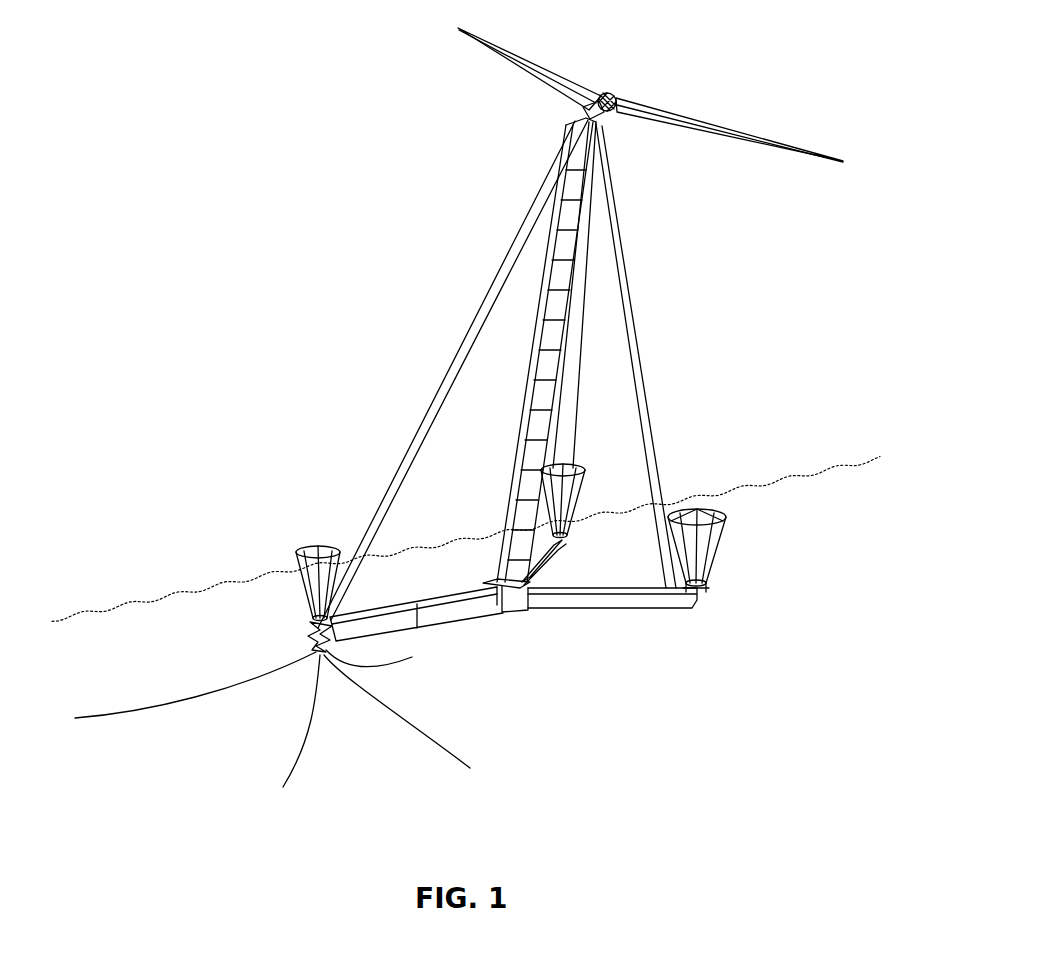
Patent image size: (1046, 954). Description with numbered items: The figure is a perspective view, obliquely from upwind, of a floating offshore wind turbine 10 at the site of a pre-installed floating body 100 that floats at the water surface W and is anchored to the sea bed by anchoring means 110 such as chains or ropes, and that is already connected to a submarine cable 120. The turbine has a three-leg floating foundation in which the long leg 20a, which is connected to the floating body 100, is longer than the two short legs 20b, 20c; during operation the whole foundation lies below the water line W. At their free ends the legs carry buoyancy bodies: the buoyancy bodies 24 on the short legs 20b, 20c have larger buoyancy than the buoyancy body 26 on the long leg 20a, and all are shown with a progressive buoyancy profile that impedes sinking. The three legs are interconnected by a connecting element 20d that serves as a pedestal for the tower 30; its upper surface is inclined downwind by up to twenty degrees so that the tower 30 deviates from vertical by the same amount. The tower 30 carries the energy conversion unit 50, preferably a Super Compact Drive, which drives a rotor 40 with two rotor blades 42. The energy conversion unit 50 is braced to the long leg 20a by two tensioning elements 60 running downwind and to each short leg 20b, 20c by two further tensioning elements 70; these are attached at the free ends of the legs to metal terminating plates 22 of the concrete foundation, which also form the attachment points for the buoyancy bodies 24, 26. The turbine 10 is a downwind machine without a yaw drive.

The floating offshore wind turbine 10 is at (364, 128).
The water line W is at (464, 539).
The rotor 40 is at (616, 93).
The rotor blades 42 is at (803, 149).
The energy conversion unit 50 is at (583, 105).
The tower 30 is at (552, 333).
The tensioning elements 60 is at (452, 348).
The further tensioning elements 70 is at (642, 382).
The buoyancy body 26 is at (300, 556).
The floating body 100 is at (310, 645).
The anchoring means 110 is at (205, 697).
The submarine cable 120 is at (297, 752).
The long leg 20a is at (460, 625).
The short leg 20b is at (597, 568).
The short leg 20c is at (622, 597).
The connecting element 20d is at (517, 603).
The buoyancy body 24 is at (712, 537).
The terminating plates 22 is at (682, 597).